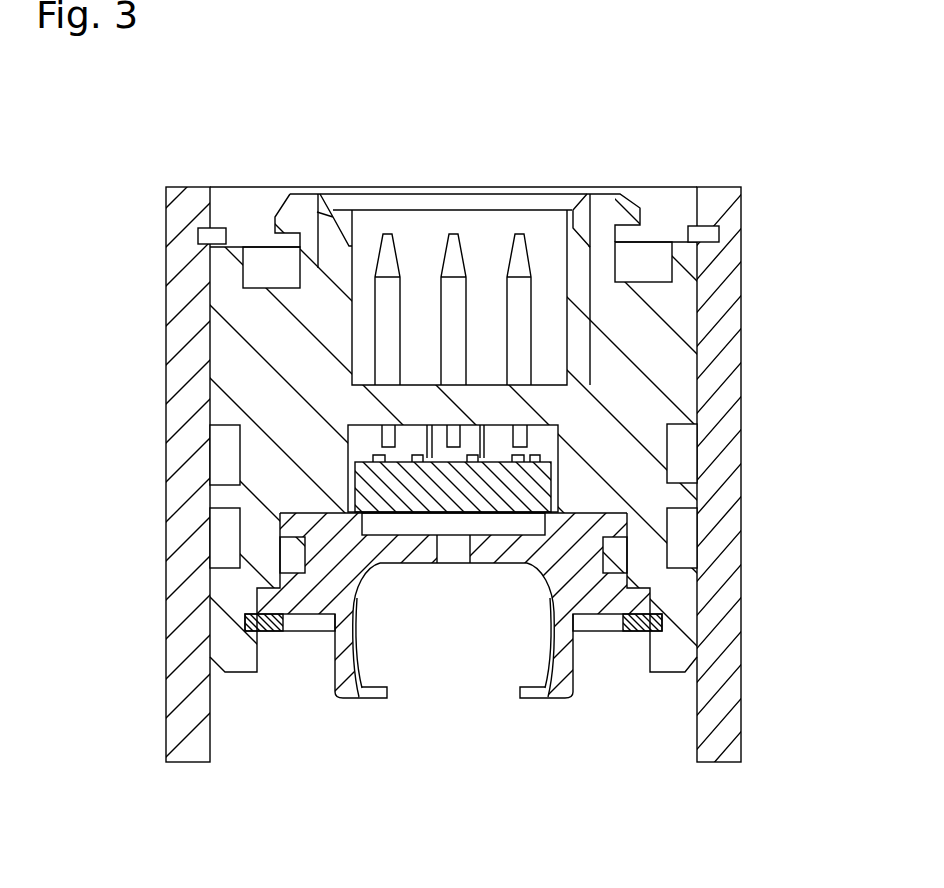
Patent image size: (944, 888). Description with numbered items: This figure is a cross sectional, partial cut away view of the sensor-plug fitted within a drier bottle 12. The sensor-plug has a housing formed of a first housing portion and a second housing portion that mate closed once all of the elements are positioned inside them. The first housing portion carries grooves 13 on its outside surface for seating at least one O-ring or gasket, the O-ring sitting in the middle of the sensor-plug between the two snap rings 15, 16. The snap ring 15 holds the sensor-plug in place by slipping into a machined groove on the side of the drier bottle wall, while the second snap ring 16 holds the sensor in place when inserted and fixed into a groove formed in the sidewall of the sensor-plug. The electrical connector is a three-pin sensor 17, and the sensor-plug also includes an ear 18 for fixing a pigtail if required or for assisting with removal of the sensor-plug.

The drier bottle 12 is at (723, 200).
The grooves 13 is at (213, 247).
The snap ring 15 is at (223, 456).
The second snap ring 16 is at (218, 538).
The three-pin sensor 17 is at (457, 230).
The ear 18 is at (612, 200).